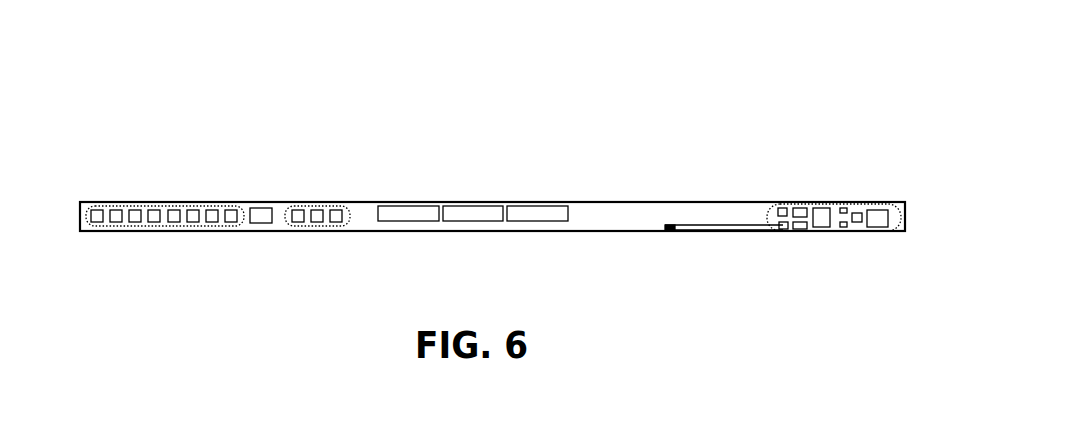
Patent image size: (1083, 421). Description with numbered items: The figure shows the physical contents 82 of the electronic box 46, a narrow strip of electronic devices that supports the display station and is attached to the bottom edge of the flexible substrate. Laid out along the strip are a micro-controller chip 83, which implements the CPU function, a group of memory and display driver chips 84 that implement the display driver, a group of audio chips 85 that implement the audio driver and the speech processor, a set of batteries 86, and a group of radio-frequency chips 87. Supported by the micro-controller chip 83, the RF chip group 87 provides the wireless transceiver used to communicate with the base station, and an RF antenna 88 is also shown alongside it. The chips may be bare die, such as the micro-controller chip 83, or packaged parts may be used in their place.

The physical contents 82 is at (514, 152).
The electronic box 46 is at (905, 222).
The micro-controller chip 83 is at (261, 224).
The group of memory and display driver chips 84 is at (205, 205).
The group of audio chips 85 is at (325, 205).
The batteries 86 is at (537, 205).
The group of radio-frequency (RF) chips 87 is at (767, 216).
The RF antenna 88 is at (697, 232).